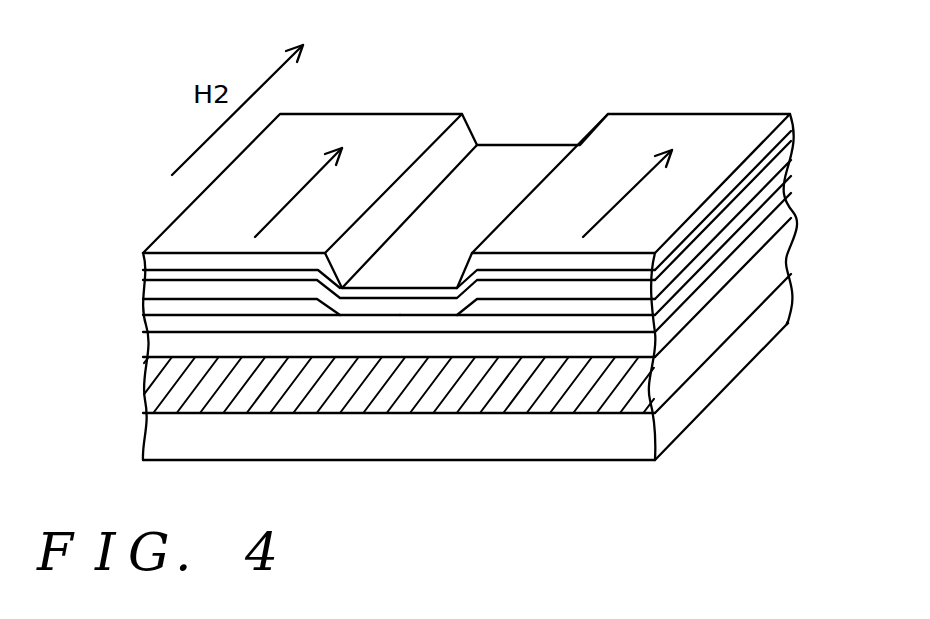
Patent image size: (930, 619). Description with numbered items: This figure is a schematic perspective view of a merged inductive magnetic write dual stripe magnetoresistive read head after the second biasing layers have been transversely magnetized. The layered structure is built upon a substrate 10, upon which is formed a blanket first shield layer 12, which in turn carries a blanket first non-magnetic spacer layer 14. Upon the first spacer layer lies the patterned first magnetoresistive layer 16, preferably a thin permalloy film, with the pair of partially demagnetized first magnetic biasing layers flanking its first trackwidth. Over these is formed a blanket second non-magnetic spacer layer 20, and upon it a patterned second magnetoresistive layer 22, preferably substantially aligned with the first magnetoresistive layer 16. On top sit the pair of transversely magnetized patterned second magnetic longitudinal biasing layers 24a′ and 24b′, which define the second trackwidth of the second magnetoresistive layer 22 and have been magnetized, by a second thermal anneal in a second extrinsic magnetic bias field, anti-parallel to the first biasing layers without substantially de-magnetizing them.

The substrate 10 is at (158, 440).
The blanket first shield layer 12 is at (152, 396).
The blanket first non-magnetic spacer layer 14 is at (150, 343).
The patterned first magnetoresistive (MR) layer 16 is at (150, 327).
The blanket second non-magnetic spacer layer 20 is at (150, 287).
The patterned second magnetoresistive (MR) layer 22 is at (150, 275).
The transversely magnetized patterned second magnetic longitudinal biasing layer 24a′ is at (150, 268).
The transversely magnetized patterned second magnetic longitudinal biasing layer 24b′ is at (647, 264).